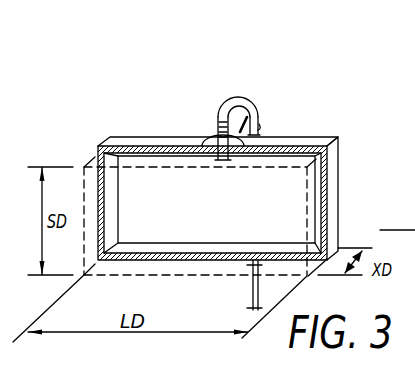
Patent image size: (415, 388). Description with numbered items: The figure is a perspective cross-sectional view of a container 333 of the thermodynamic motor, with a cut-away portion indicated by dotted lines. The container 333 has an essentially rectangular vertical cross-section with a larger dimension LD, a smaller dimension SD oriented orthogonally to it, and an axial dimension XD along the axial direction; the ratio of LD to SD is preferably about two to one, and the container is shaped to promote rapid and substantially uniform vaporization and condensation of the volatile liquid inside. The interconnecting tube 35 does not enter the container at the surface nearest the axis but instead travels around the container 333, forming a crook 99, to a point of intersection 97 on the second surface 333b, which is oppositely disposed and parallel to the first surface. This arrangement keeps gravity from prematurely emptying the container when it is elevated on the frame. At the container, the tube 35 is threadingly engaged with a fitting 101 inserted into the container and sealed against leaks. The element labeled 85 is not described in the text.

The container 333 is at (98, 128).
The second surface 333b is at (310, 143).
The crook 99 is at (227, 99).
The point of intersection 97 is at (251, 107).
The fitting 101 is at (207, 138).
The interconnecting tube 35 is at (260, 126).
The rail 85 is at (403, 229).